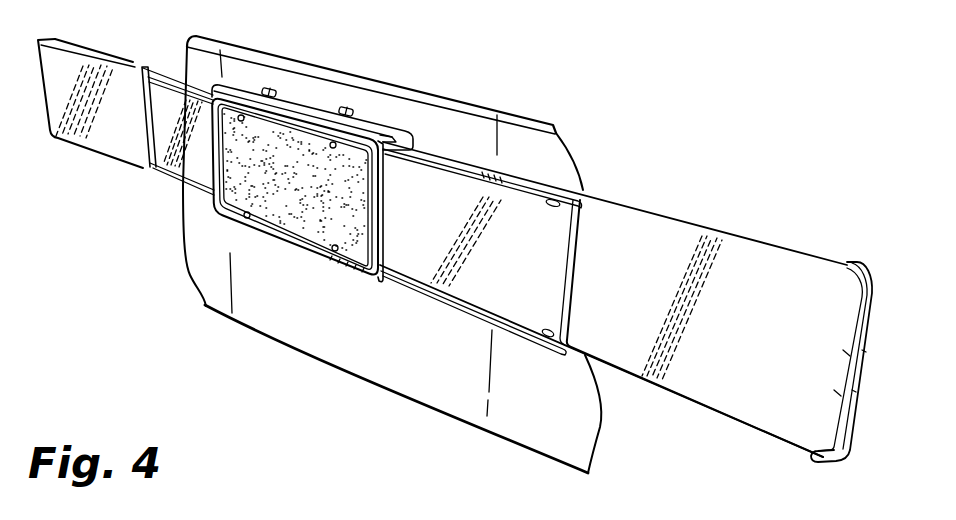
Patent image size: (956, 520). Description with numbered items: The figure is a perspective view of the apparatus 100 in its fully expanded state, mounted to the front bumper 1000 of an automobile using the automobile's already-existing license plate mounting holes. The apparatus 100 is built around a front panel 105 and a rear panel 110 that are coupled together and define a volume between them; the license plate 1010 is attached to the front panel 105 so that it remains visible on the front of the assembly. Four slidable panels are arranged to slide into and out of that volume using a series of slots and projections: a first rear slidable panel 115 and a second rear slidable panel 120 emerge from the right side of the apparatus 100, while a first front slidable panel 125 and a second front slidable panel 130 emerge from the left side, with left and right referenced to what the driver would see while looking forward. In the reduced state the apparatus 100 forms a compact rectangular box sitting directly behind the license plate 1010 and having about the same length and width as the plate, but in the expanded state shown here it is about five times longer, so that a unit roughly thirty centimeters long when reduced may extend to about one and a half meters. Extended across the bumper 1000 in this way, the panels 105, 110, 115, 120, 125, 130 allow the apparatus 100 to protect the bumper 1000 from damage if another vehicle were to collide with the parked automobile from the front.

The apparatus 100 is at (126, 263).
The front panel 105 is at (290, 112).
The rear panel 110 is at (322, 107).
The first rear slidable panel 115 is at (167, 113).
The second rear slidable panel 120 is at (88, 135).
The first front slidable panel 125 is at (440, 197).
The second front slidable panel 130 is at (735, 395).
The front bumper 1000 is at (395, 373).
The license plate 1010 is at (307, 220).